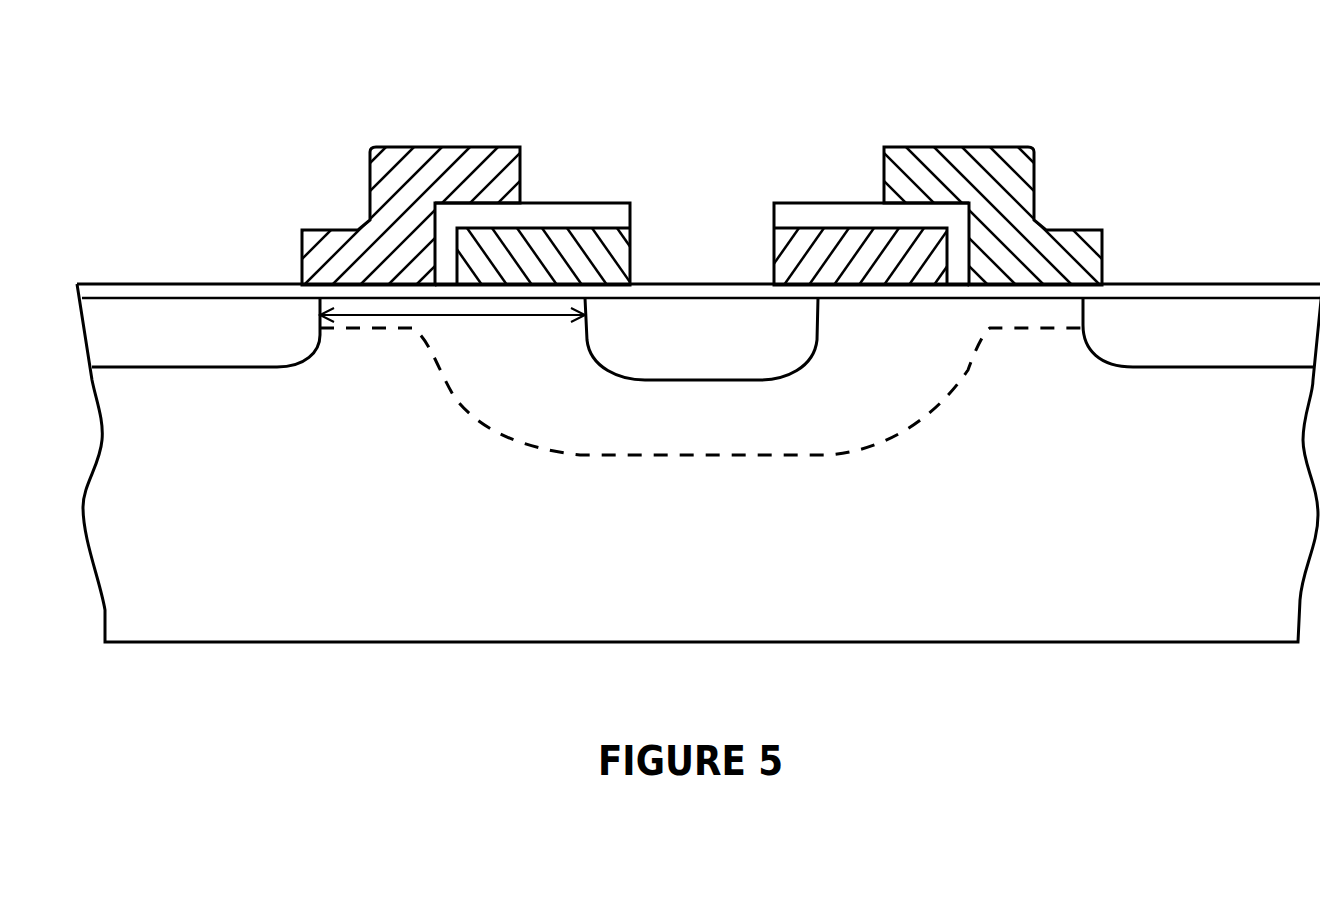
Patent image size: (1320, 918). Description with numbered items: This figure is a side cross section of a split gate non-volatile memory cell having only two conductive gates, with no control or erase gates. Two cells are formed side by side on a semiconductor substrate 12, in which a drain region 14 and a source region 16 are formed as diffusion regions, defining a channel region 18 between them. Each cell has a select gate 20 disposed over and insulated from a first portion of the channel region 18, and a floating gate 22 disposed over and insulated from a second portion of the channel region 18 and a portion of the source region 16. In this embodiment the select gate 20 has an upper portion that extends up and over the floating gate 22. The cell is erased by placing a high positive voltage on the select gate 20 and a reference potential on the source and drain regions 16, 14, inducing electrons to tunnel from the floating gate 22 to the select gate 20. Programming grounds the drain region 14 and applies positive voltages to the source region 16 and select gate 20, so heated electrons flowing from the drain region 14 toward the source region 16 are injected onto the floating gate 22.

The semiconductor substrate 12 is at (177, 571).
The drain region 14 is at (211, 348).
The source region 16 is at (729, 353).
The channel region 18 is at (473, 318).
The select gate 20 is at (475, 160).
The floating gate 22 is at (632, 250).